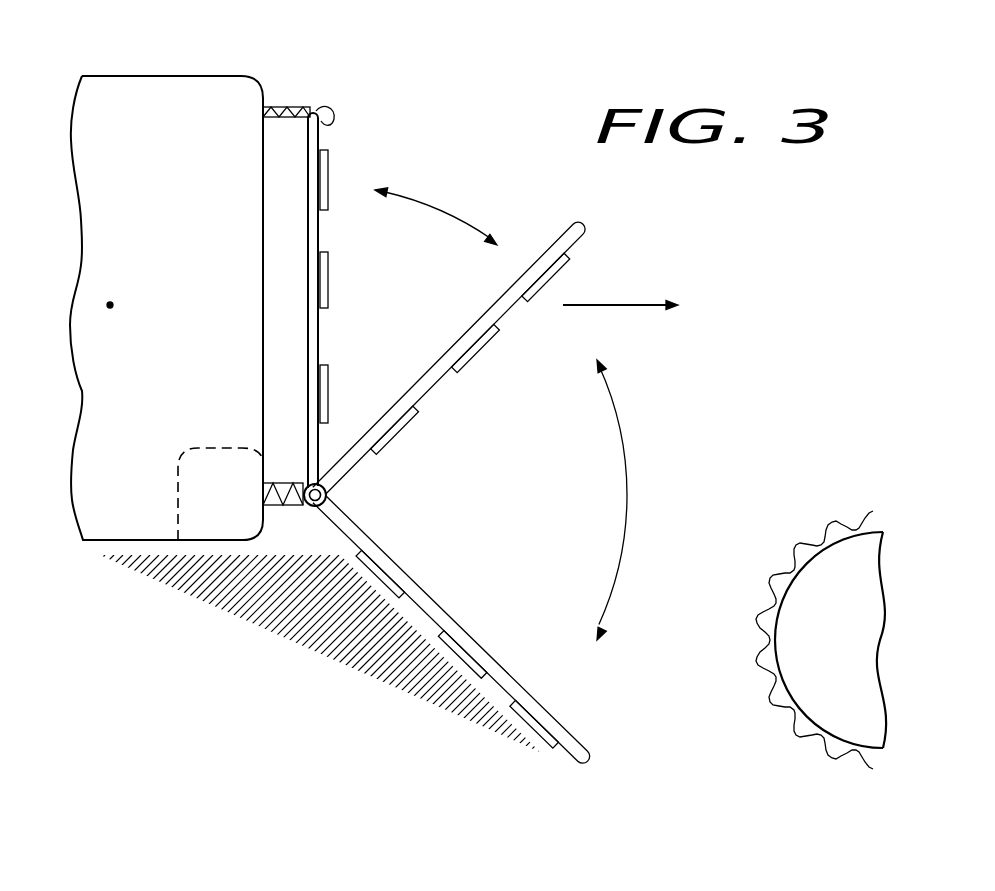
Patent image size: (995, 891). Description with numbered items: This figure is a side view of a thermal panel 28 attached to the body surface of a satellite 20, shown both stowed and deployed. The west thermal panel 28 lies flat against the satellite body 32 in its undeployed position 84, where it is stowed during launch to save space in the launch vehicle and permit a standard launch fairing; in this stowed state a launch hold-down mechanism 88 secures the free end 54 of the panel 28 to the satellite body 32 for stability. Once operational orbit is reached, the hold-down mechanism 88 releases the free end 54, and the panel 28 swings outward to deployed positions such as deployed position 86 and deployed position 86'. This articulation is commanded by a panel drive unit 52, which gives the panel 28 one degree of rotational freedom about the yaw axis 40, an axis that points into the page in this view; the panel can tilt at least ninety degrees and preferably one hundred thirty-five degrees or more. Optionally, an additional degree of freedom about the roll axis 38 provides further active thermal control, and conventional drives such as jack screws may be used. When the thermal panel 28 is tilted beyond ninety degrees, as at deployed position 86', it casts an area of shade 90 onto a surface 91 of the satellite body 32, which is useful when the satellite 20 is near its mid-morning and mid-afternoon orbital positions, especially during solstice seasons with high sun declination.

The satellite 20 is at (127, 56).
The satellite body 32 is at (182, 177).
The yaw axis 40 is at (112, 305).
The panel drive unit 52 is at (207, 448).
The launch hold-down mechanism 88 is at (289, 106).
The free end 54 is at (331, 105).
The undeployed position 84 is at (322, 228).
The thermal panel 28 is at (321, 331).
The deployed position 86 is at (493, 214).
The deployed position 86' is at (617, 572).
The roll axis 38 is at (592, 303).
The area of shade 90 is at (293, 657).
The surface 91 is at (86, 542).